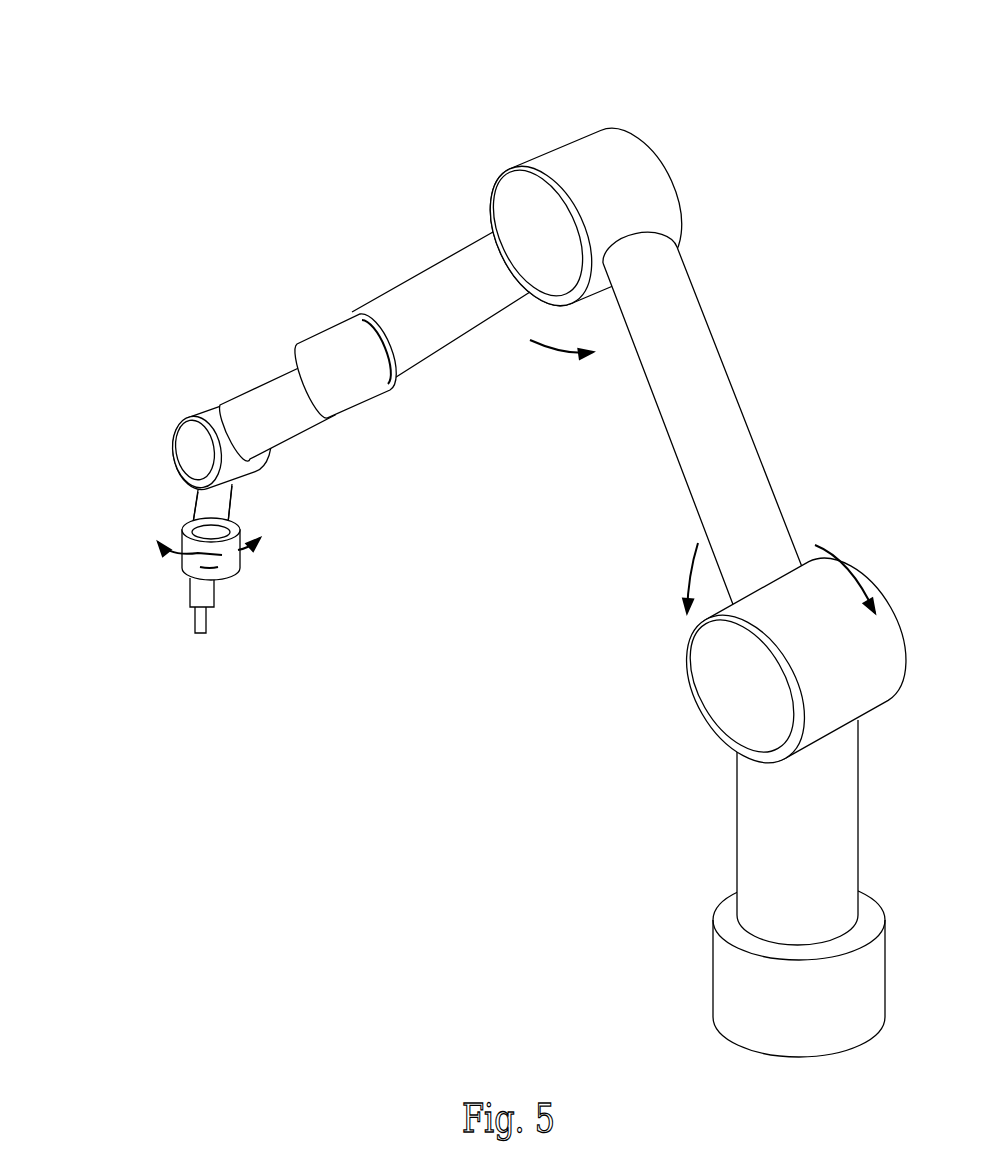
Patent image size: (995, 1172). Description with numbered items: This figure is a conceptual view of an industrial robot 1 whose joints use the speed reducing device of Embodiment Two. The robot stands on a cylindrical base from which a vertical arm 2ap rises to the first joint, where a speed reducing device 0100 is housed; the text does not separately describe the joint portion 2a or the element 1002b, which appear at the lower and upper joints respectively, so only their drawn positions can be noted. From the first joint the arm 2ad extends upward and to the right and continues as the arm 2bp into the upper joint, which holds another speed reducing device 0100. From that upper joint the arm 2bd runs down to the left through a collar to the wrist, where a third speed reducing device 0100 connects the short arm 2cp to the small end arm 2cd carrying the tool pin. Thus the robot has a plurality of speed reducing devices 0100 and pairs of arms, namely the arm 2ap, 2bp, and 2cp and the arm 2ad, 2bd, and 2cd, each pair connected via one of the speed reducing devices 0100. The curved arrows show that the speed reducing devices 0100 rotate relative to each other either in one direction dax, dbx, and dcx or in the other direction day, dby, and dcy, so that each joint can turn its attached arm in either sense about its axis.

The industrial robot 1 is at (501, 534).
The speed reducing device 0100 is at (501, 439).
The joint housing 1002b is at (538, 205).
The arm 2bd is at (465, 262).
The arm 2bp is at (712, 363).
The arm 2ad is at (763, 498).
The joint 2a is at (708, 688).
The arm 2ap is at (847, 812).
The arm 2cp is at (207, 503).
The arm 2cd is at (184, 595).
The one direction dbx is at (483, 125).
The other direction dby is at (552, 369).
The other direction day is at (662, 578).
The one direction dax is at (853, 567).
The one direction dcx is at (164, 547).
The other direction dcy is at (272, 561).